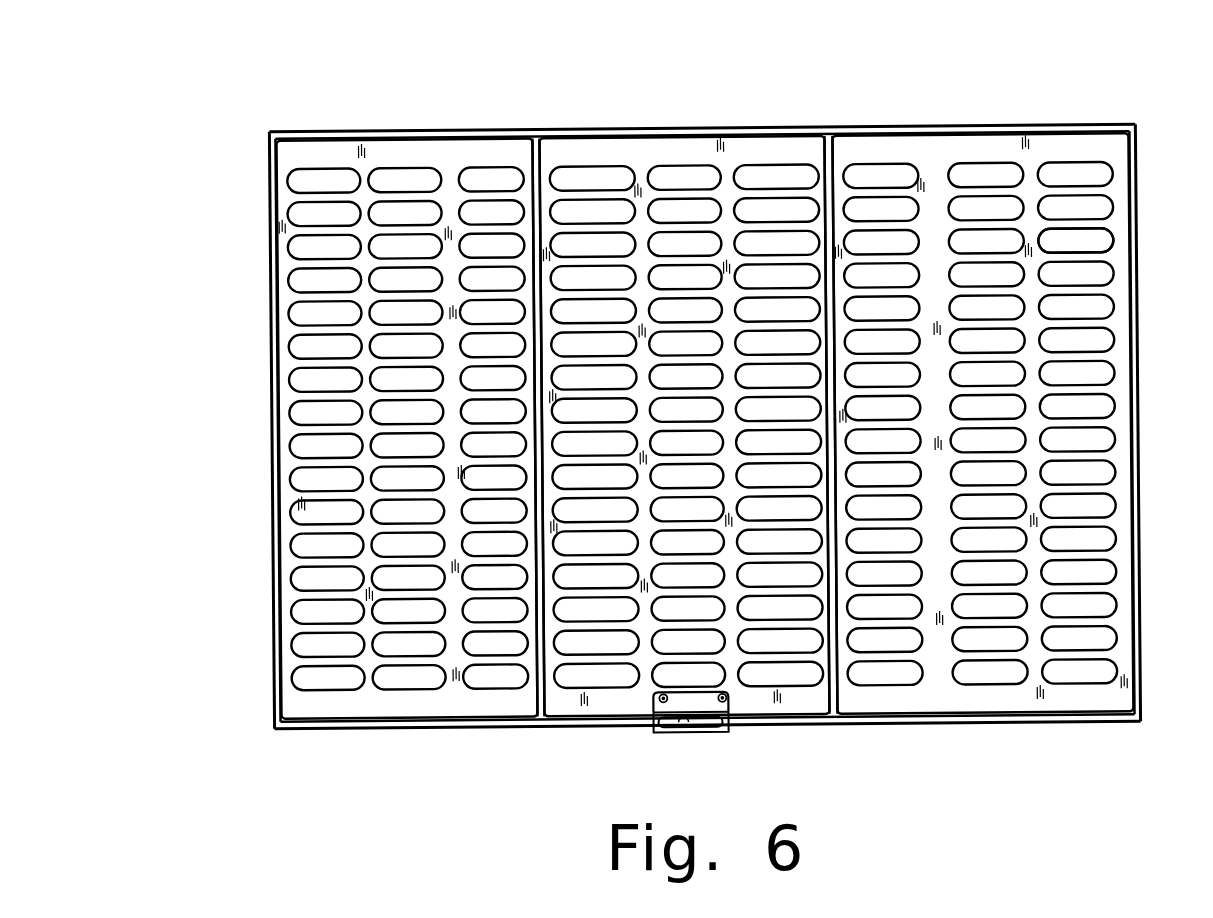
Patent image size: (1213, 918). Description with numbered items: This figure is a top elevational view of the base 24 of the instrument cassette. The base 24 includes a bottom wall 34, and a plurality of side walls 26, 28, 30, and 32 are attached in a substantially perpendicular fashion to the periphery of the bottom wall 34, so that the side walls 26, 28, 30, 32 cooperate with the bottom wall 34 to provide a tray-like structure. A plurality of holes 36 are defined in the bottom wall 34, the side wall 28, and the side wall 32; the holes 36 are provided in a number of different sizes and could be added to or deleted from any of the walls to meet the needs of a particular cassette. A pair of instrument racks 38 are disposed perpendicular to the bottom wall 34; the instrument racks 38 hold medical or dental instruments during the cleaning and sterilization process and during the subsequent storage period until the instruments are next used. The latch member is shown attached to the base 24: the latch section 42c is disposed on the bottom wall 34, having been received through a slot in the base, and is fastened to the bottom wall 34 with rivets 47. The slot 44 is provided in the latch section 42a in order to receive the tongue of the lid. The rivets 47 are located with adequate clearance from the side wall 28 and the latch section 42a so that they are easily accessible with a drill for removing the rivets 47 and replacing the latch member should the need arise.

The base 24 is at (178, 94).
The side wall 26 is at (1140, 509).
The side wall 28 is at (814, 722).
The side wall 30 is at (272, 416).
The side wall 32 is at (667, 130).
The bottom wall 34 is at (410, 152).
The holes 36 is at (1086, 247).
The instrument racks 38 is at (552, 153).
The latch section 42a is at (656, 731).
The latch section 42c is at (696, 692).
The slot 44 is at (680, 722).
The rivets 47 is at (651, 697).